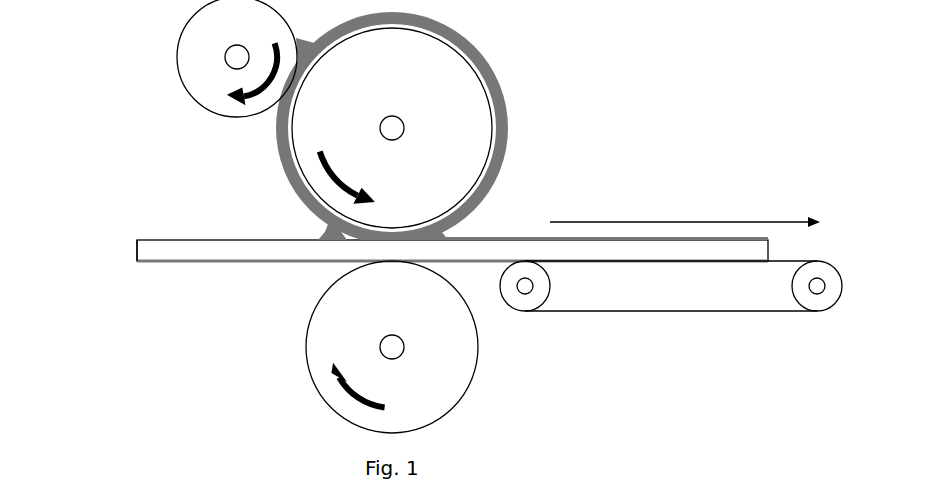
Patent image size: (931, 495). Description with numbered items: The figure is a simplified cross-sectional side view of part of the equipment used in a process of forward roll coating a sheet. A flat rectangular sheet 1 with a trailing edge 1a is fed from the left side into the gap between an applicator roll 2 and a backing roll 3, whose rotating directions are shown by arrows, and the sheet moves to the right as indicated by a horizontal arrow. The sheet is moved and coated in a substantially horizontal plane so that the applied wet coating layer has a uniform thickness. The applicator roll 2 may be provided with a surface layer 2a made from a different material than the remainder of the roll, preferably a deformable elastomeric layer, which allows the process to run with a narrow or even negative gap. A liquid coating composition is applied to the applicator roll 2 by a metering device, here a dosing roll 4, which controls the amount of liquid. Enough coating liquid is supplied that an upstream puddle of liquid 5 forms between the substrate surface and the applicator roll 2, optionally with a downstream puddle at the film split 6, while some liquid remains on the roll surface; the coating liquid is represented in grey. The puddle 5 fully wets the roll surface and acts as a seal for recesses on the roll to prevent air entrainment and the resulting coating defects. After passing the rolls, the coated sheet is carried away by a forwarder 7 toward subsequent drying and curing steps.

The sheet 1 is at (233, 263).
The trailing edge 1a is at (137, 251).
The applicator roll 2 is at (477, 43).
The surface layer 2a is at (505, 105).
The backing roll 3 is at (307, 372).
The dosing roll 4 is at (173, 32).
The upstream puddle of liquid 5 is at (318, 230).
The film split 6 is at (453, 230).
The forwarder 7 is at (633, 318).